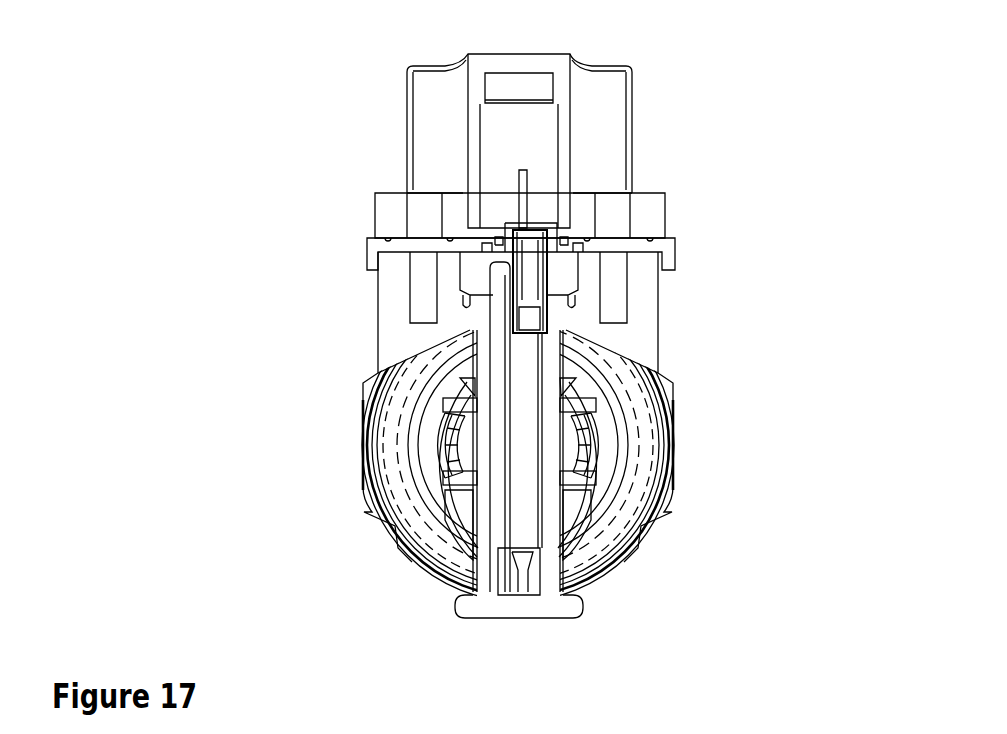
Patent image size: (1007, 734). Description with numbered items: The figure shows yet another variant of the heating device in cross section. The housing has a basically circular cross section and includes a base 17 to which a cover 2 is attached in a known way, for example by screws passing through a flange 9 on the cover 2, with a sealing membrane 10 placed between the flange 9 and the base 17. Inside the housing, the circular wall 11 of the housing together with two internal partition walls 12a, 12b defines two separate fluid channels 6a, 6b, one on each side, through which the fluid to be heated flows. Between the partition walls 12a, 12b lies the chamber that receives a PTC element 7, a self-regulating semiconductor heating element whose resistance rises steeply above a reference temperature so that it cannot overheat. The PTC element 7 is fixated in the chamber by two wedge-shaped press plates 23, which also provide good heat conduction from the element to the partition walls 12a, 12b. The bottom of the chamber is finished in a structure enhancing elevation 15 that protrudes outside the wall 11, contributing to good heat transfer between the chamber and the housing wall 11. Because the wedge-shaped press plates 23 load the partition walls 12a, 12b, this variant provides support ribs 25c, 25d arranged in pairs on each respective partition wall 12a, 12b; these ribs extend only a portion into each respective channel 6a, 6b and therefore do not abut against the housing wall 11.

The cover 2 is at (633, 80).
The flange 9 is at (372, 200).
The sealing membrane 10 is at (362, 248).
The base 17 is at (377, 285).
The press plates 23 is at (492, 363).
The PTC element 7 is at (540, 373).
The support rib 25c is at (440, 398).
The support rib 25d is at (443, 483).
The wall of the housing 11 is at (362, 432).
The fluid channel 6a is at (443, 453).
The fluid channel 6b is at (593, 437).
The internal partition wall 12a is at (472, 508).
The internal partition wall 12b is at (562, 513).
The structure enhancing elevation 15 is at (574, 616).